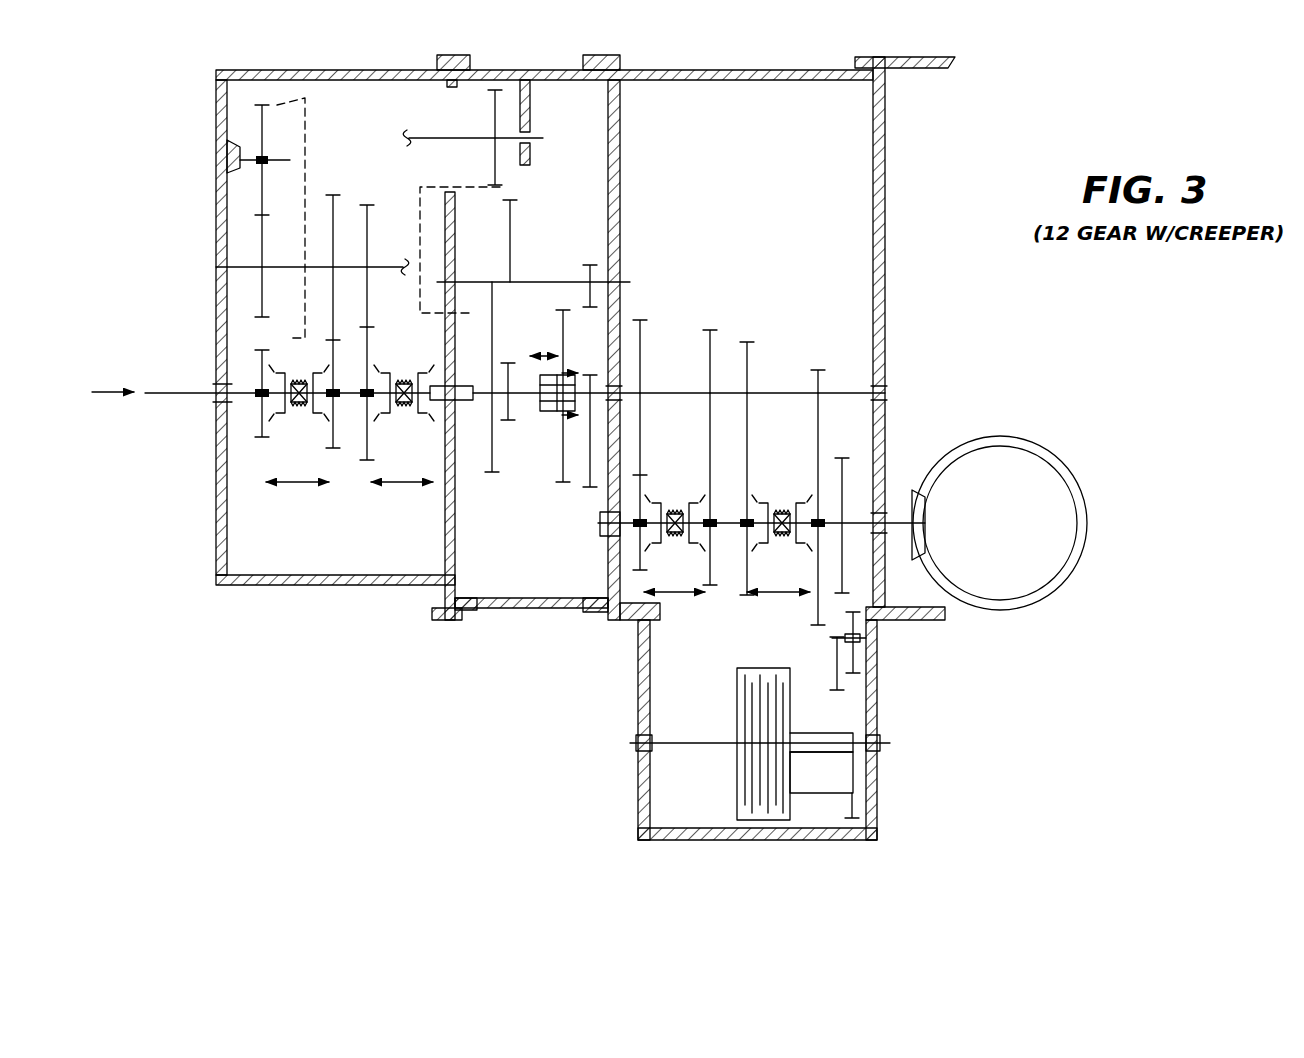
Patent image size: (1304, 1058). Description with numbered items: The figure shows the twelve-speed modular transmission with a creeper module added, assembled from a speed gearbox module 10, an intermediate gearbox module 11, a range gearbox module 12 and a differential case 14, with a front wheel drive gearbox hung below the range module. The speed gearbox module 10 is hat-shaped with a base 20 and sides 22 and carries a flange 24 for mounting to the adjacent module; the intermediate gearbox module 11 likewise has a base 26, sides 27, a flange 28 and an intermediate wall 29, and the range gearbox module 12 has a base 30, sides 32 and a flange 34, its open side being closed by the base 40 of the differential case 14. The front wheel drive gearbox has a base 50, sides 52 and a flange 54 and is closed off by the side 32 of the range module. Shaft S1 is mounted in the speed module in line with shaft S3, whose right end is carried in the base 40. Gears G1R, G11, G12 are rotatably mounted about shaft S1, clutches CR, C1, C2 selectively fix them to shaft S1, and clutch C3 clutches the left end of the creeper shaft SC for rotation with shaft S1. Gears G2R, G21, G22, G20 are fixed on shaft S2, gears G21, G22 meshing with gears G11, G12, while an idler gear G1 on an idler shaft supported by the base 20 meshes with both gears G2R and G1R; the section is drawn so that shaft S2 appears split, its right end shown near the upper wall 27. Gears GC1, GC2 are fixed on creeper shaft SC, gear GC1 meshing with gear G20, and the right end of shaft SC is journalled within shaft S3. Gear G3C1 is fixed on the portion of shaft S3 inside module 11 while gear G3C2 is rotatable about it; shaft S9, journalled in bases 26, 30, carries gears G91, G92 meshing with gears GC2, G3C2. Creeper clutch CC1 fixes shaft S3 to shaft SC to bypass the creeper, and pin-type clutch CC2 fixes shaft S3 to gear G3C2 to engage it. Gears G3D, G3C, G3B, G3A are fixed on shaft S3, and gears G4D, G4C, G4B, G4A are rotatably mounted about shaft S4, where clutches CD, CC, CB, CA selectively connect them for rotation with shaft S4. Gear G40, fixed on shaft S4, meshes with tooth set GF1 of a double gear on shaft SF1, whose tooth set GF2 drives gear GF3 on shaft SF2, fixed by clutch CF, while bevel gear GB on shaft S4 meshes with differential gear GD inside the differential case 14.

The speed gearbox module 10 is at (208, 606).
The intermediate gearbox module 11 is at (543, 67).
The range gearbox module 12 is at (745, 65).
The differential case 14 is at (963, 87).
The base 20 is at (216, 528).
The sides 22 is at (253, 70).
The flange 24 is at (440, 58).
The base 26 is at (445, 552).
The sides 27 is at (460, 83).
The flange 28 is at (582, 83).
The intermediate wall 29 is at (532, 92).
The base 30 is at (620, 118).
The sides 32 is at (605, 617).
The flange 34 is at (857, 60).
The base 40 is at (885, 118).
The base 50 is at (705, 826).
The sides 52 is at (637, 780).
The flange 54 is at (632, 643).
The shaft S1 is at (290, 160).
The shaft S2 is at (425, 137).
The shaft S3 is at (887, 395).
The shaft S4 is at (893, 518).
The shaft S9 is at (625, 280).
The creeper shaft SC is at (478, 398).
The shaft SF1 is at (866, 638).
The shaft SF2 is at (880, 745).
The idler gear G1 is at (282, 130).
The gear G1R is at (260, 437).
The gear G2R is at (262, 223).
The gear G11 is at (330, 450).
The gear G12 is at (363, 460).
The gear G21 is at (347, 170).
The gear G22 is at (380, 192).
The gear G20 is at (495, 165).
The gear G91 is at (510, 202).
The gear G92 is at (592, 267).
The gear GC1 is at (492, 318).
The gear GC2 is at (563, 312).
The creeper clutch CC1 is at (530, 375).
The creeper clutch CC2 is at (540, 413).
The clutch CR is at (277, 372).
The clutch C1 is at (310, 418).
The clutch C2 is at (397, 345).
The clutch C3 is at (420, 418).
The gear G3A is at (840, 368).
The gear G3B is at (748, 360).
The gear G3C is at (713, 338).
The gear G3D is at (665, 312).
The gear G4A is at (818, 440).
The gear G4B is at (745, 477).
The gear G4C is at (713, 473).
The gear G4D is at (647, 473).
The gear G3C1 is at (557, 472).
The gear G3C2 is at (587, 482).
The clutch CA is at (778, 578).
The clutch CB is at (777, 503).
The clutch CC is at (674, 578).
The clutch CD is at (655, 503).
The gear G40 is at (842, 560).
The bevel gear GB is at (925, 512).
The differential gear GD is at (1058, 460).
The gear tooth set GF1 is at (837, 677).
The gear tooth set GF2 is at (855, 670).
The gear GF3 is at (852, 798).
The clutch CF is at (740, 718).